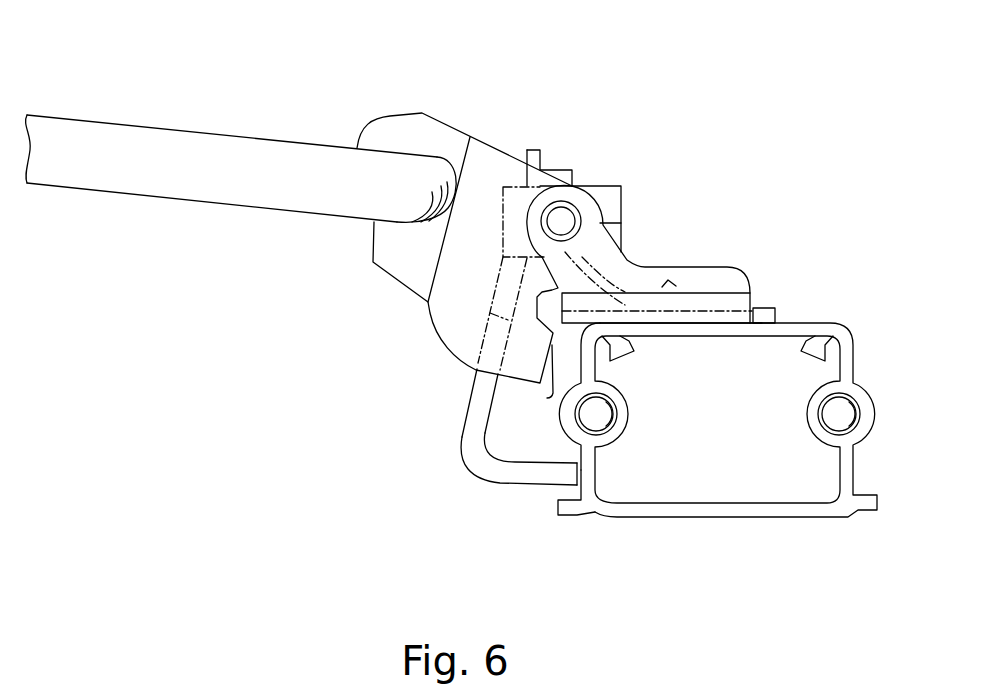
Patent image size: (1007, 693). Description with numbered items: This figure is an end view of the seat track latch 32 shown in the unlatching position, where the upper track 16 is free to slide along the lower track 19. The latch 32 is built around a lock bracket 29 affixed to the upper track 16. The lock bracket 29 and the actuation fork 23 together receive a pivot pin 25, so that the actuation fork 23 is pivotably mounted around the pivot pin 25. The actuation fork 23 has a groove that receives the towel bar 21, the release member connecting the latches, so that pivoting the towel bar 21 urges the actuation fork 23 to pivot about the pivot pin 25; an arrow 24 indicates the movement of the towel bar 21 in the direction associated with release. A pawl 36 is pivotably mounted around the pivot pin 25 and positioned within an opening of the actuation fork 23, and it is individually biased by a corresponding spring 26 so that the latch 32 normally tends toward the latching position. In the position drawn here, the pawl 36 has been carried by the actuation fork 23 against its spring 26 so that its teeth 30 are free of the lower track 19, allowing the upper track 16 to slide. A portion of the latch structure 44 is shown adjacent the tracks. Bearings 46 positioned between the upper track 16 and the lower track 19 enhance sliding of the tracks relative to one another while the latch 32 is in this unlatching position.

The upper track 16 is at (573, 513).
The lower track 19 is at (641, 519).
The towel bar 21 is at (296, 149).
The actuation fork 23 is at (712, 268).
The release direction arrow 24 is at (372, 224).
The pivot pin 25 is at (565, 213).
The spring 26 is at (666, 282).
The lock bracket 29 is at (766, 306).
The teeth 30 is at (543, 479).
The latch 32 is at (547, 138).
The pawl 36 is at (466, 450).
The lever plate 44 is at (553, 388).
The bearings 46 is at (596, 410).